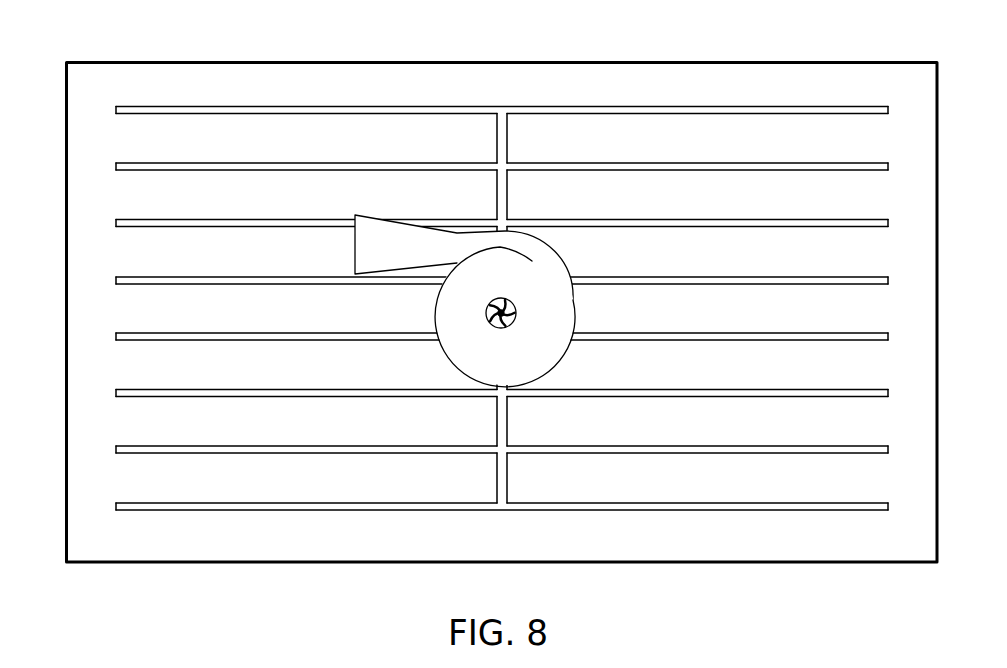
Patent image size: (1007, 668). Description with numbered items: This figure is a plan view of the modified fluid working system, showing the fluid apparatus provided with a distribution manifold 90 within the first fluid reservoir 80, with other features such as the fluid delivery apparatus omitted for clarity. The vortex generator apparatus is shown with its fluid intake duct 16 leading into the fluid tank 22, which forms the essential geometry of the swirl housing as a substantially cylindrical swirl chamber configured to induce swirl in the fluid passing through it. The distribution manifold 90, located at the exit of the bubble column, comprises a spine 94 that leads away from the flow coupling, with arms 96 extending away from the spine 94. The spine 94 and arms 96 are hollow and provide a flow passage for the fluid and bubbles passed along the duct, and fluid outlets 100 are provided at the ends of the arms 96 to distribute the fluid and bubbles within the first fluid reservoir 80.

The fluid intake duct 16 is at (372, 230).
The fluid tank 22 is at (577, 300).
The first fluid reservoir 80 is at (123, 77).
The distribution manifold 90 is at (260, 106).
The spine 94 is at (500, 151).
The arms 96 is at (845, 106).
The fluid outlets 100 is at (115, 108).